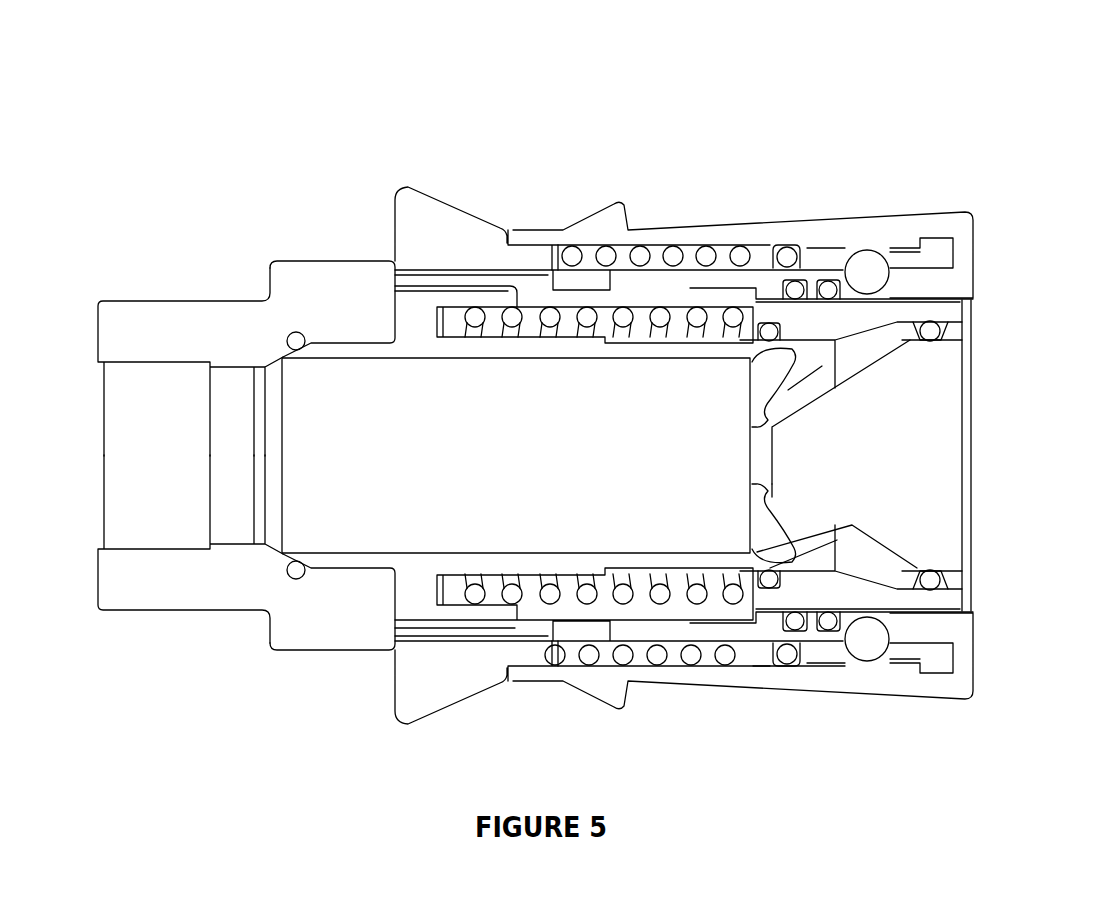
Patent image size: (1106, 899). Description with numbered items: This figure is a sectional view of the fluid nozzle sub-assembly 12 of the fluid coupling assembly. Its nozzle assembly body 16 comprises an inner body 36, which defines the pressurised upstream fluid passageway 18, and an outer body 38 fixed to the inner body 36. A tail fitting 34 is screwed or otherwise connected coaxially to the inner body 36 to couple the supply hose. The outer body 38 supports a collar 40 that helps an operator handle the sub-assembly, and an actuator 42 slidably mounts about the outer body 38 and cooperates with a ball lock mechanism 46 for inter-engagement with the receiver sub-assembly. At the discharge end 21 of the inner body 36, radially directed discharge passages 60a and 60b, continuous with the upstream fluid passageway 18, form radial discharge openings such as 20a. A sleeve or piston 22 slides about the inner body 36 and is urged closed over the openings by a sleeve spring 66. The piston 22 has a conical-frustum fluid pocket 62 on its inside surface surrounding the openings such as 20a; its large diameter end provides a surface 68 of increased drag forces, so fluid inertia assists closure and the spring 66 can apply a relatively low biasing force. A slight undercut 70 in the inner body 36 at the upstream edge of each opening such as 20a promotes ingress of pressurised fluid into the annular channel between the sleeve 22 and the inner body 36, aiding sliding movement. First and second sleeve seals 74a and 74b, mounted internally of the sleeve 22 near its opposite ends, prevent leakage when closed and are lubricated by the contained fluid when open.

The fluid nozzle sub-assembly 12 is at (447, 153).
The nozzle assembly body 16 is at (408, 609).
The upstream fluid passageway 18 is at (493, 478).
The radial discharge opening 20a is at (865, 355).
The discharge end 21 is at (938, 400).
The sleeve or piston 22 is at (772, 298).
The tail fitting 34 is at (202, 589).
The inner body 36 is at (557, 568).
The outer body 38 is at (720, 628).
The collar 40 is at (415, 210).
The actuator 42 is at (757, 665).
The ball lock mechanism 46 is at (868, 240).
The radial discharge passage 60a is at (788, 390).
The radial discharge passage 60b is at (782, 518).
The fluid pocket 62 is at (885, 572).
The sleeve spring 66 is at (545, 310).
The surface of increased drag forces 68 is at (912, 565).
The undercut 70 is at (797, 285).
The first sleeve seal 74a is at (770, 315).
The second sleeve seal 74b is at (928, 328).